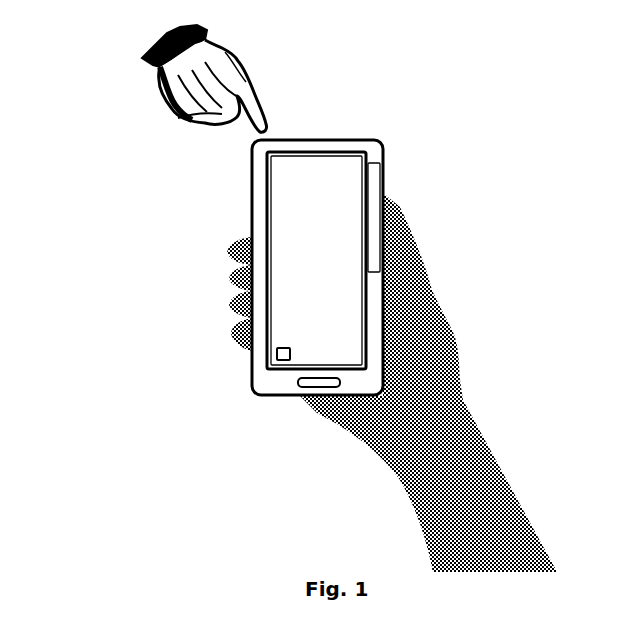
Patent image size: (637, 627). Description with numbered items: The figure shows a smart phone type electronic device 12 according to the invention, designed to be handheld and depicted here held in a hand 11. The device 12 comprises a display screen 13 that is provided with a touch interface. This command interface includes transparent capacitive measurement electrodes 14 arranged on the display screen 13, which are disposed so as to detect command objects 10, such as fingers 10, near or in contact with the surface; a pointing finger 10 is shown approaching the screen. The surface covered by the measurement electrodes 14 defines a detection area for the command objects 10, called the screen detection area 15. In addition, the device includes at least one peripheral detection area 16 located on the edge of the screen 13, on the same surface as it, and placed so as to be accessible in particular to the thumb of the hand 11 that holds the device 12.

The command object 10 is at (143, 60).
The hand 11 is at (500, 468).
The electronic device 12 is at (316, 140).
The display screen 13 is at (268, 190).
The capacitive measurement electrodes 14 is at (277, 355).
The screen detection area 15 is at (268, 222).
The peripheral detection area 16 is at (383, 190).